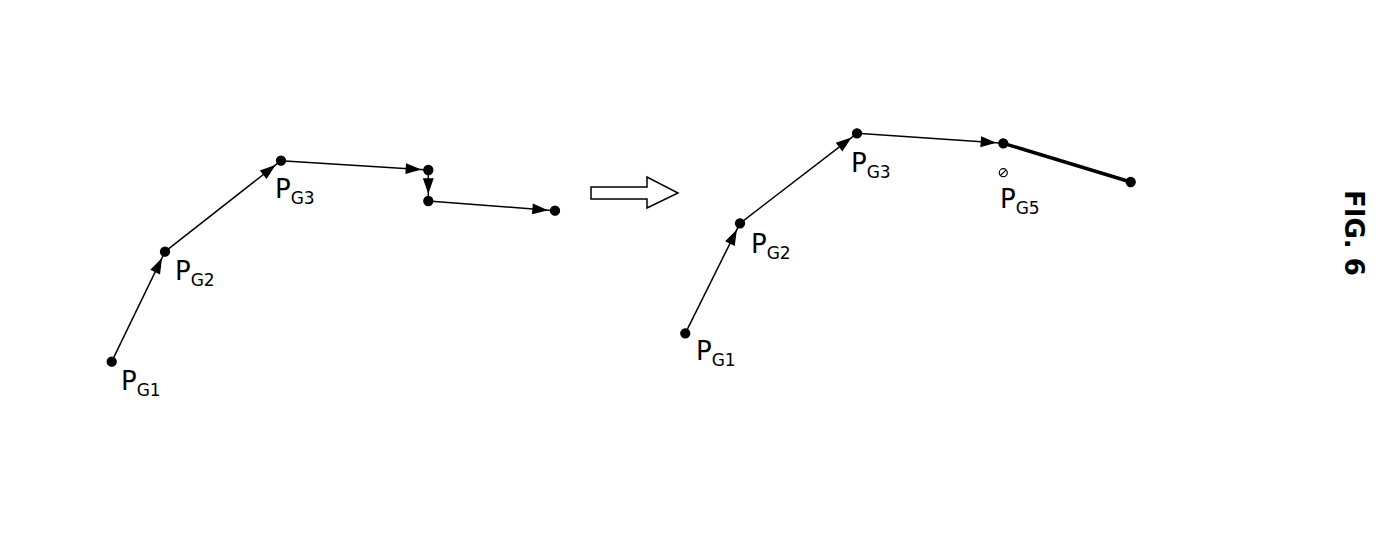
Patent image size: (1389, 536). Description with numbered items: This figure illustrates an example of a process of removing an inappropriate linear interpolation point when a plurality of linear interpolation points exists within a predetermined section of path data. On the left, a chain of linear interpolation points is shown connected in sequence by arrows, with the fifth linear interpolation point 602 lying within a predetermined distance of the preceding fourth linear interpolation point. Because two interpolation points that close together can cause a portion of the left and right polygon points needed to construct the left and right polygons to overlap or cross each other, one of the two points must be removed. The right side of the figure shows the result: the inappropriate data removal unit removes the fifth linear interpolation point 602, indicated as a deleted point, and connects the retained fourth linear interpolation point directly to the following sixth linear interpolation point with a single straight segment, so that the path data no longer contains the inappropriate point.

The linear interpolation point P_G5 602 is at (424, 201).